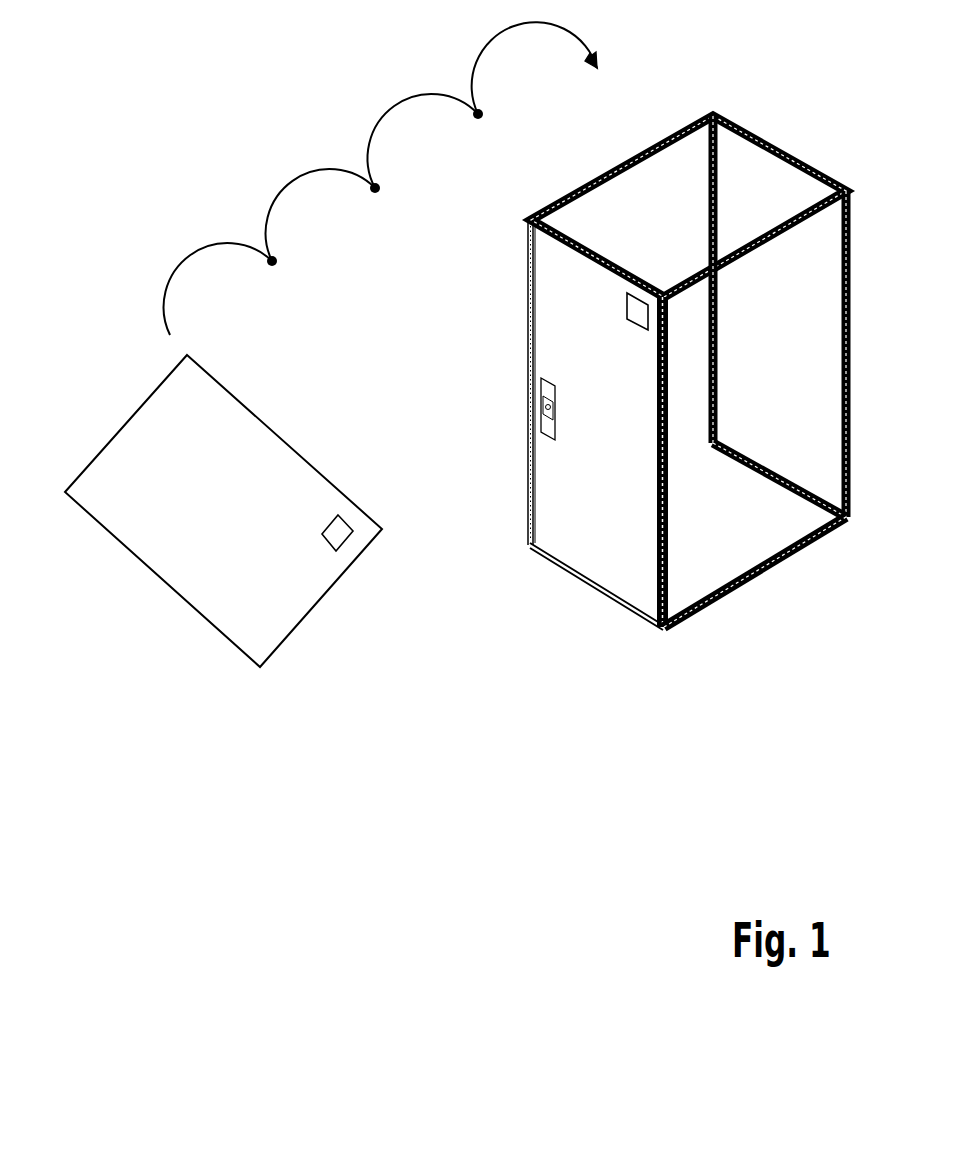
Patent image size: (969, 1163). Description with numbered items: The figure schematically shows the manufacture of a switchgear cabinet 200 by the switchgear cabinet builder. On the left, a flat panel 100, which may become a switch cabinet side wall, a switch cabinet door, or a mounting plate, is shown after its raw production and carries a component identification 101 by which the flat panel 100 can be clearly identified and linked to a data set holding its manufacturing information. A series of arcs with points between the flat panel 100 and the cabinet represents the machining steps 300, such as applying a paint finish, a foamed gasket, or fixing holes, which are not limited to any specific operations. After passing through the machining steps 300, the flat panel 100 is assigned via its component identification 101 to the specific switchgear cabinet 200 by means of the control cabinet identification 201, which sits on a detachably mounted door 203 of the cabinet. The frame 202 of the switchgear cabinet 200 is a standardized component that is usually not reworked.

The flat panel 100 is at (160, 619).
The component identification 101 is at (338, 532).
The switchgear cabinet 200 is at (753, 606).
The control cabinet identification 201 is at (638, 313).
The frame 202 is at (823, 537).
The door 203 is at (588, 552).
The machining steps 300 is at (272, 266).